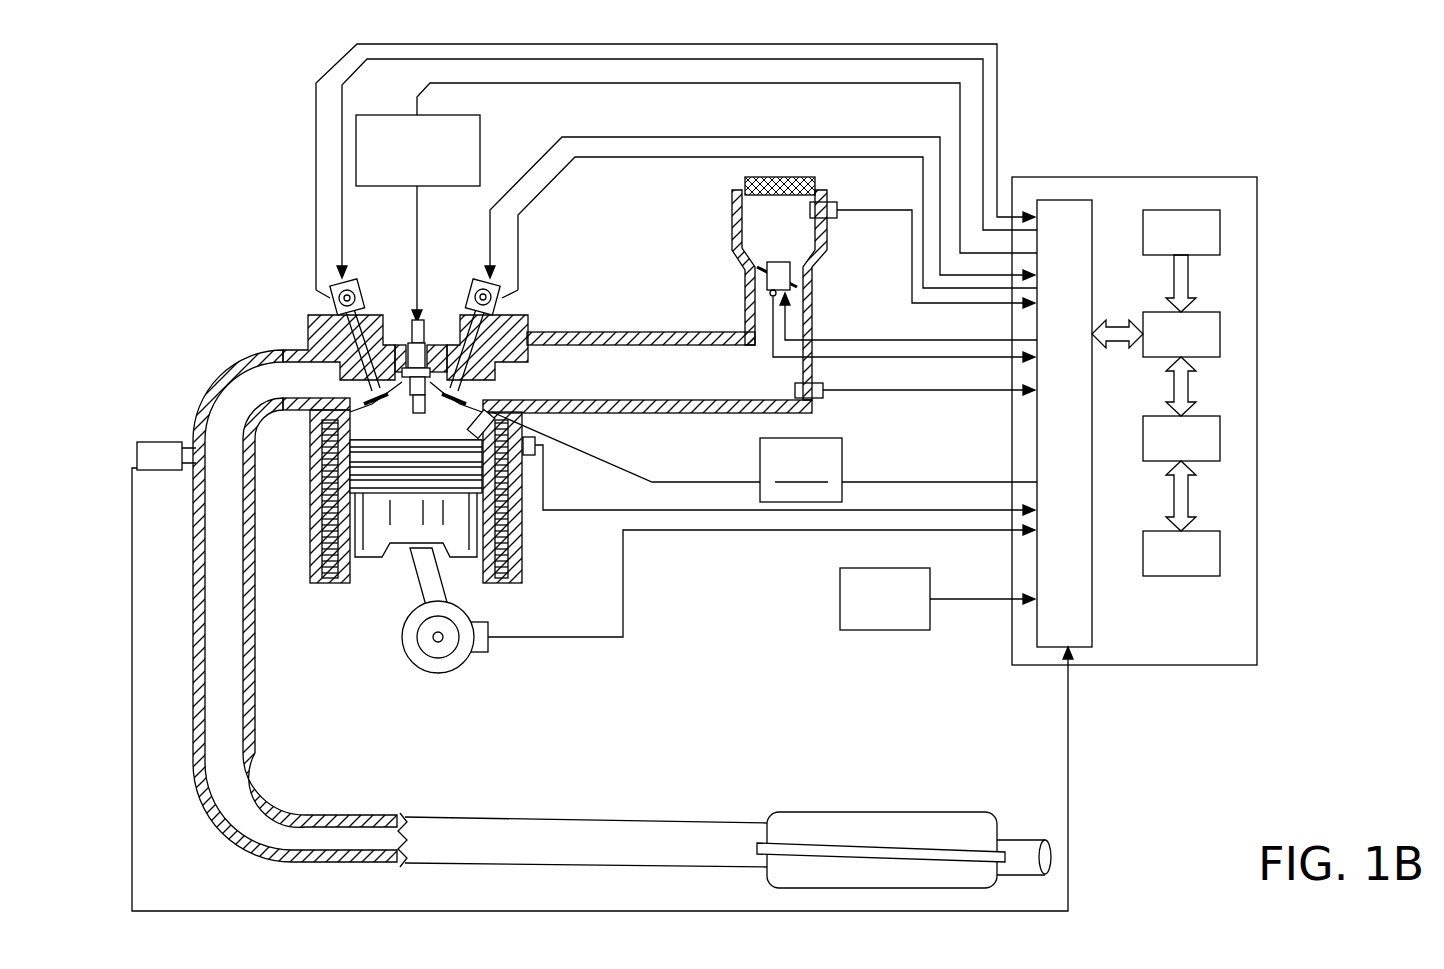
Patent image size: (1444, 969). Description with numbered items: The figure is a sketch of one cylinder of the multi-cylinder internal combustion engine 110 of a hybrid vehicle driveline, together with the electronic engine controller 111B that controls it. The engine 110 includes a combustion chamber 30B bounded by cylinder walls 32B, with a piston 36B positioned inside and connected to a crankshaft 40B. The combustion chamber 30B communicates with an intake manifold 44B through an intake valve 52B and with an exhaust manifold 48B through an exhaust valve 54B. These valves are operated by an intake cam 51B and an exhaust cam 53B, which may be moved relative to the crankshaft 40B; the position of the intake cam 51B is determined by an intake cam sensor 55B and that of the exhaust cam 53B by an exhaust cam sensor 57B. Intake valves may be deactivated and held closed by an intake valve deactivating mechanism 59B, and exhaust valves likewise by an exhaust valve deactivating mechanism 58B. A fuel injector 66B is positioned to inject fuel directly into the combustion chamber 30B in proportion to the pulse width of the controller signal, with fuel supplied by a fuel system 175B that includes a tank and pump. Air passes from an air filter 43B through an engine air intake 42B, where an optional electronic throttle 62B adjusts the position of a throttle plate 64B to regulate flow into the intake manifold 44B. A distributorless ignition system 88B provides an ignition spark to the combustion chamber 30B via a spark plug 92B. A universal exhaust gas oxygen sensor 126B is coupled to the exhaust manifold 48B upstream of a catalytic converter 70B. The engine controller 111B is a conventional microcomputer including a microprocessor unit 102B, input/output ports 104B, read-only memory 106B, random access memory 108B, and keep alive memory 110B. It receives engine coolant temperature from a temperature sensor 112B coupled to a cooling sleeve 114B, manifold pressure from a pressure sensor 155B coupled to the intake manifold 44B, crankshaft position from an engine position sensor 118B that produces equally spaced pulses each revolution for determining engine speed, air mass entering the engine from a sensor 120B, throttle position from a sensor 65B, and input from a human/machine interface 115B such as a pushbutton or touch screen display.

The internal combustion engine 110 is at (236, 262).
The combustion chamber 30B is at (413, 420).
The cylinder walls 32B is at (352, 566).
The piston 36B is at (392, 545).
The crankshaft 40B is at (425, 660).
The engine air intake 42B is at (800, 239).
The air filter 43B is at (745, 178).
The intake manifold 44B is at (637, 384).
The exhaust manifold 48B is at (302, 392).
The intake cam 51B is at (480, 289).
The intake valve 52B is at (495, 383).
The exhaust cam 53B is at (365, 282).
The exhaust valve 54B is at (300, 345).
The intake cam sensor 55B is at (490, 297).
The exhaust cam sensor 57B is at (328, 300).
The exhaust valve deactivating mechanism 58B is at (362, 298).
The intake valve deactivating mechanism 59B is at (476, 298).
The electronic throttle 62B is at (797, 284).
The throttle plate 64B is at (762, 268).
The throttle position sensor 65B is at (770, 295).
The fuel injector 66B is at (525, 420).
The catalytic converter 70B is at (808, 812).
The distributorless ignition system 88B is at (372, 115).
The spark plug 92B is at (420, 322).
The microprocessor unit 102B is at (1220, 330).
The input/output ports 104B is at (1092, 210).
The read-only memory 106B is at (1220, 230).
The random access memory 108B is at (1220, 440).
The keep alive memory 110B is at (1222, 548).
The electronic engine controller 111B is at (1245, 177).
The temperature sensor 112B is at (779, 476).
The cooling sleeve 114B is at (520, 533).
The human/machine interface 115B is at (937, 599).
The engine position sensor 118B is at (488, 624).
The air mass sensor 120B is at (830, 202).
The Universal Exhaust Gas Oxygen (UEGO) sensor 126B is at (137, 446).
The pressure sensor 155B is at (820, 398).
The fuel system 175B is at (764, 457).